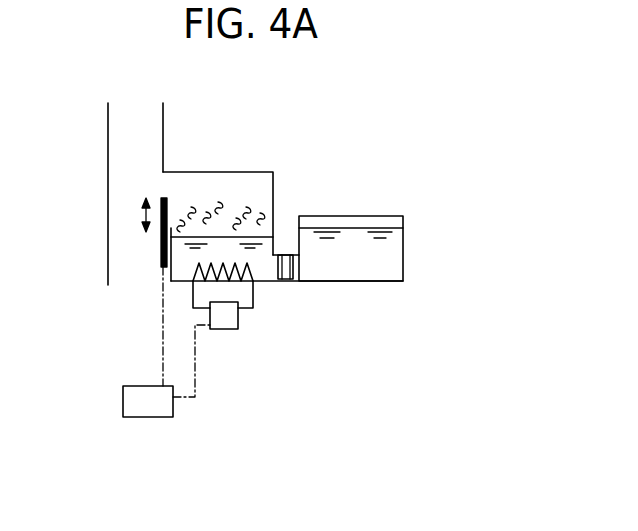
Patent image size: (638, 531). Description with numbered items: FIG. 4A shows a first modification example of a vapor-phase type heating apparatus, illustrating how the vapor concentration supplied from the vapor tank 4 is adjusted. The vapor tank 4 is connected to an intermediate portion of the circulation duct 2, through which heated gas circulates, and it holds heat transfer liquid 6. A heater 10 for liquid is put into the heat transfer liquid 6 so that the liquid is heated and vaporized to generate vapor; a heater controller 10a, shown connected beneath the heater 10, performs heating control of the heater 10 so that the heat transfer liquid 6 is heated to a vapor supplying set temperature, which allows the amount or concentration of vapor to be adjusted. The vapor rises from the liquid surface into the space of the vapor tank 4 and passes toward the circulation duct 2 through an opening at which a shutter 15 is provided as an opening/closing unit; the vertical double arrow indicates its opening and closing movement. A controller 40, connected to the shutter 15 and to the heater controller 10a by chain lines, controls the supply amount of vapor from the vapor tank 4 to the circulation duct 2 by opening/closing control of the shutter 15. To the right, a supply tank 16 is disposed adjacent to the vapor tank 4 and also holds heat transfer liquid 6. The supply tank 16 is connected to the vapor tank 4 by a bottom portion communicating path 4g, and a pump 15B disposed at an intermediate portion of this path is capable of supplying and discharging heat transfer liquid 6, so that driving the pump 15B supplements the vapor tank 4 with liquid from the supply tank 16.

The circulation duct 2 is at (140, 134).
The vapor tank 4 is at (247, 193).
The heat transfer liquid 6 is at (388, 265).
The bottom portion communicating path 4g is at (297, 271).
The pump 15B is at (283, 254).
The supply tank 16 is at (382, 214).
The heater for liquid 10 is at (258, 310).
The heater controller 10a is at (222, 329).
The shutter 15 is at (160, 251).
The controller 40 is at (123, 399).